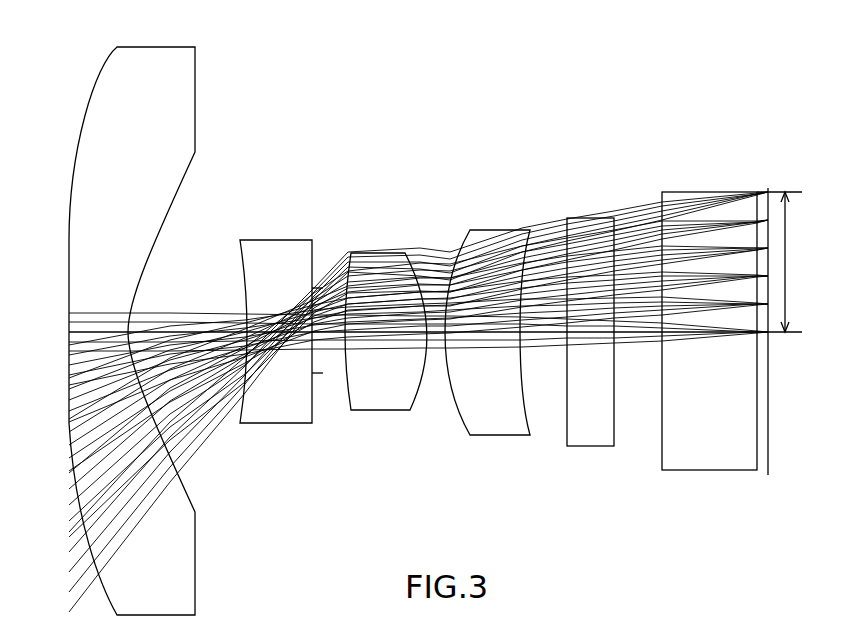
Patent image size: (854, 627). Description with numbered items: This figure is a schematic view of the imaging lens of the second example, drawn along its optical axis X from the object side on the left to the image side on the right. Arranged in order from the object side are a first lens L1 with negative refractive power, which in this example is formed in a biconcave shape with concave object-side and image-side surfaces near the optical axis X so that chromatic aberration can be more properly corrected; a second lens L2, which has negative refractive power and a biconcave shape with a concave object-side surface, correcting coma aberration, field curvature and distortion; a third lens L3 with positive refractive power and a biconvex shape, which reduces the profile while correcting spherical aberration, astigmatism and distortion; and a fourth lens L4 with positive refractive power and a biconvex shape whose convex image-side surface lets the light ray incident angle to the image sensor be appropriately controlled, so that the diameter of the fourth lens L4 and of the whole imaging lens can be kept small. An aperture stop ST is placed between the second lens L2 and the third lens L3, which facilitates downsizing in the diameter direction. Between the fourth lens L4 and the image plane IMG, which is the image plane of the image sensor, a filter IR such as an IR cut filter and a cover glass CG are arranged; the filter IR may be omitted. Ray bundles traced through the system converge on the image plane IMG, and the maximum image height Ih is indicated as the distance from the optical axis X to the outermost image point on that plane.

The optical axis X is at (86, 312).
The first lens L1 is at (168, 47).
The second lens L2 is at (300, 239).
The aperture stop ST is at (322, 374).
The third lens L3 is at (388, 252).
The fourth lens L4 is at (521, 229).
The filter IR is at (600, 218).
The cover glass CG is at (708, 192).
The image plane IMG is at (768, 473).
The maximum image height Ih is at (784, 262).